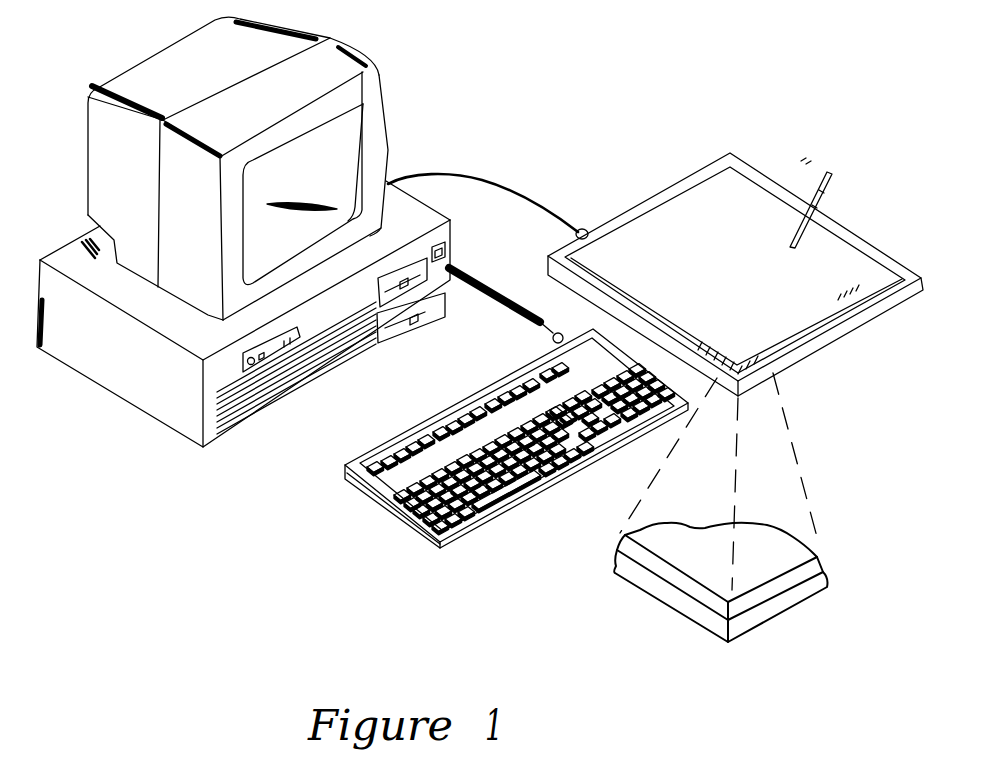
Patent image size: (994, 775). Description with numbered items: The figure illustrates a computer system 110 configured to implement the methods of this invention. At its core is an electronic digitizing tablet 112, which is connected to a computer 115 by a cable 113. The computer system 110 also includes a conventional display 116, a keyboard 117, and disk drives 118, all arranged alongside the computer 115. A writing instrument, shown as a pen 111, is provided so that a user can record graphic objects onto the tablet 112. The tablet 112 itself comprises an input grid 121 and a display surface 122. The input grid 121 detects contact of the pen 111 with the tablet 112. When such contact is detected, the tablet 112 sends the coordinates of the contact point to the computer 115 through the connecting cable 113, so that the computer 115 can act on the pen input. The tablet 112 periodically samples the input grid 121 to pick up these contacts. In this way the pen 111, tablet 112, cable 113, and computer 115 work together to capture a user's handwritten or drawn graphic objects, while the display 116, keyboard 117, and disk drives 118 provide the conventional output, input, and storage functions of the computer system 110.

The computer system 110 is at (492, 98).
The pen 111 is at (823, 192).
The electronic digitizing tablet 112 is at (746, 259).
The cable 113 is at (538, 202).
The computer 115 is at (190, 330).
The display 116 is at (328, 147).
The keyboard 117 is at (388, 482).
The disk drives 118 is at (378, 292).
The input grid 121 is at (653, 560).
The display surface 122 is at (705, 622).